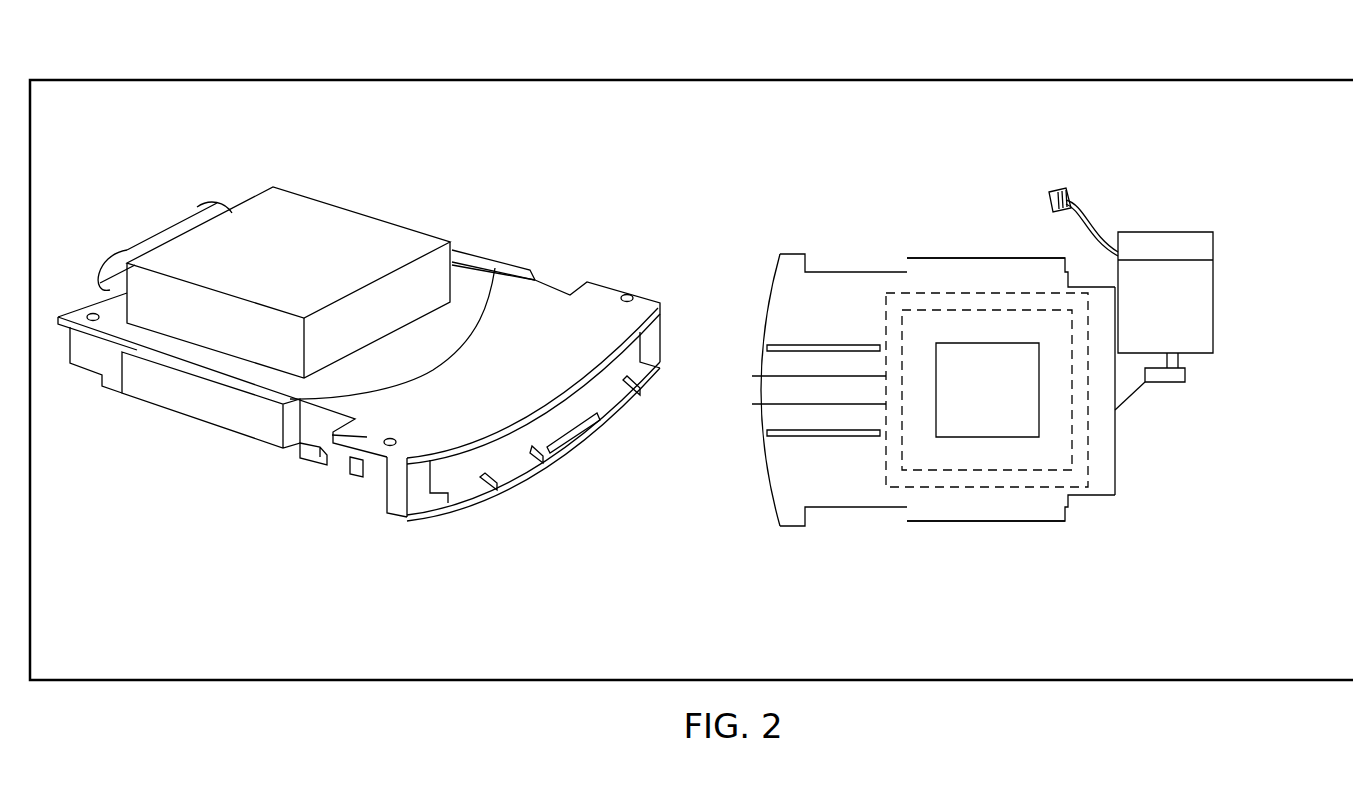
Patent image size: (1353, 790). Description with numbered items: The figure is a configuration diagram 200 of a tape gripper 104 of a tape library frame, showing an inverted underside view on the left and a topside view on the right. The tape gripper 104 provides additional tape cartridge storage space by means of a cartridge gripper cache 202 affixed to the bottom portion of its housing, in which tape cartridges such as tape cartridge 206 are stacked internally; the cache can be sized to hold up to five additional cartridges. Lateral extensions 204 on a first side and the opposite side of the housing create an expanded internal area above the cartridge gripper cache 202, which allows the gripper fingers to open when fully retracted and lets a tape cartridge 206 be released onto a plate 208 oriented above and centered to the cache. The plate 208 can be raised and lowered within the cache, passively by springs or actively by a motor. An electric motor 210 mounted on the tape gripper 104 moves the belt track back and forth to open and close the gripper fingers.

The configuration diagram of a tape gripper 200 is at (318, 40).
The tape gripper 104 is at (607, 397).
The cartridge gripper cache 202 is at (960, 292).
The lateral extensions 204 is at (297, 400).
The tape cartridge 206 is at (955, 418).
The plate 208 is at (1060, 415).
The electric motor 210 is at (1277, 242).